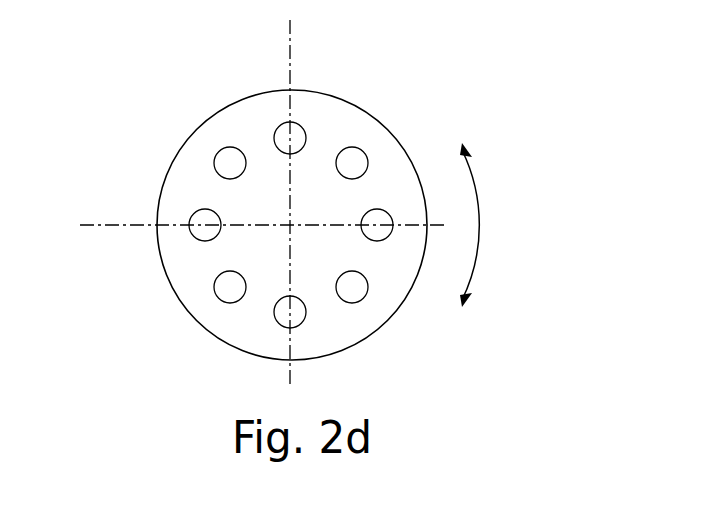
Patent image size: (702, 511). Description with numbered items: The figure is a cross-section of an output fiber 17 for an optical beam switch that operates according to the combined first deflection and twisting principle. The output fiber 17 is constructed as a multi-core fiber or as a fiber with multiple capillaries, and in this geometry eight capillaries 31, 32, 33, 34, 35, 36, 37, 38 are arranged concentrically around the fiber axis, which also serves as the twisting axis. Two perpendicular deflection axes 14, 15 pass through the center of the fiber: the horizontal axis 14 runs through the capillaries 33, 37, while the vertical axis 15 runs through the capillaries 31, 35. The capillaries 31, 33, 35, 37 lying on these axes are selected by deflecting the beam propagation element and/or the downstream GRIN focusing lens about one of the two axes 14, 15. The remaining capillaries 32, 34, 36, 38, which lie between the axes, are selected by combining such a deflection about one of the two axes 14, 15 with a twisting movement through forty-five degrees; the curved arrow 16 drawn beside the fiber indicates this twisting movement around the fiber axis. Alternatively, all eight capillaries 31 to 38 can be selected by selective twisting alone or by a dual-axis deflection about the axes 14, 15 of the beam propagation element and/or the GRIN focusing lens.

The axis 14 is at (92, 225).
The axis 15 is at (292, 52).
The rotation direction arrow 16 is at (484, 220).
The output fiber 17 is at (225, 110).
The capillary 31 is at (297, 138).
The capillary 32 is at (355, 160).
The capillary 33 is at (377, 213).
The capillary 34 is at (358, 280).
The capillary 35 is at (300, 313).
The capillary 36 is at (240, 298).
The capillary 37 is at (202, 235).
The capillary 38 is at (222, 168).